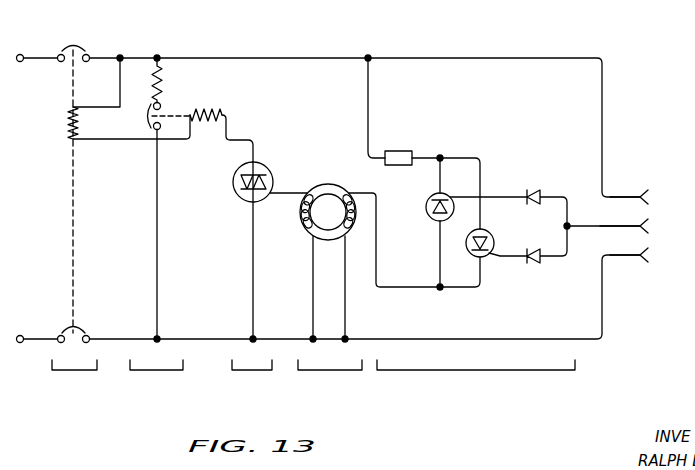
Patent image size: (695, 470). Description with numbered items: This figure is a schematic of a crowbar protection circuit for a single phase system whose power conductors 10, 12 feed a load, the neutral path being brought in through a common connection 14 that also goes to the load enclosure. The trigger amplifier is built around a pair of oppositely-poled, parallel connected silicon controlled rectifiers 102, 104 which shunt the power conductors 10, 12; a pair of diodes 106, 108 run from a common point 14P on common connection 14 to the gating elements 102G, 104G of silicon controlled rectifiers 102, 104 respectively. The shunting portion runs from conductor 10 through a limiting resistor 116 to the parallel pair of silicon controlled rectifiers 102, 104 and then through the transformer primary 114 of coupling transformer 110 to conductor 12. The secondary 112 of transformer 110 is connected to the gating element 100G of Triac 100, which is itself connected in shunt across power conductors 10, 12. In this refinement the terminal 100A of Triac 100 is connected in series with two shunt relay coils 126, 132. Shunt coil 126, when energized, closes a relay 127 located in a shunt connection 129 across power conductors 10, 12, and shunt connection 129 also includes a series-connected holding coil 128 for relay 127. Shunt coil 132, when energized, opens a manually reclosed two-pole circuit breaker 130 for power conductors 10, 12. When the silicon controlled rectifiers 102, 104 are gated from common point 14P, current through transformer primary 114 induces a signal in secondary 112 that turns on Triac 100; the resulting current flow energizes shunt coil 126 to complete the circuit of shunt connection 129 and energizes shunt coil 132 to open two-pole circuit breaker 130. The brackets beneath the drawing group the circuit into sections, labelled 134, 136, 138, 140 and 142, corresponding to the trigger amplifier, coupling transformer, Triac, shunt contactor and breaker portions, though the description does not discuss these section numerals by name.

The power conductor 10 is at (616, 197).
The power conductor 12 is at (614, 255).
The common connection 14 is at (614, 226).
The common point 14P is at (569, 224).
The Triac 100 is at (238, 196).
The terminal of Triac 100A is at (259, 167).
The gating element of Triac 100G is at (268, 198).
The silicon controlled rectifier 102 is at (487, 237).
The gating element of silicon controlled rectifier 102 102G is at (487, 257).
The silicon controlled rectifier 104 is at (428, 218).
The gating element of silicon controlled rectifier 104 104G is at (449, 197).
The diode 106 is at (540, 263).
The diode 108 is at (538, 192).
The coupling transformer 110 is at (331, 185).
The secondary of transformer 112 is at (305, 229).
The transformer primary 114 is at (352, 229).
The limiting resistor 116 is at (404, 150).
The shunt relay coil 126 is at (212, 110).
The relay 127 is at (146, 118).
The holding coil 128 is at (164, 88).
The shunt connection 129 is at (152, 218).
The two-pole circuit breaker 130 is at (86, 46).
The shunt relay coil 132 is at (68, 126).
The firing circuit section 134 is at (476, 372).
The transformer section 136 is at (325, 372).
The triac section 138 is at (250, 372).
The switch section 140 is at (154, 372).
The power switch section 142 is at (73, 372).